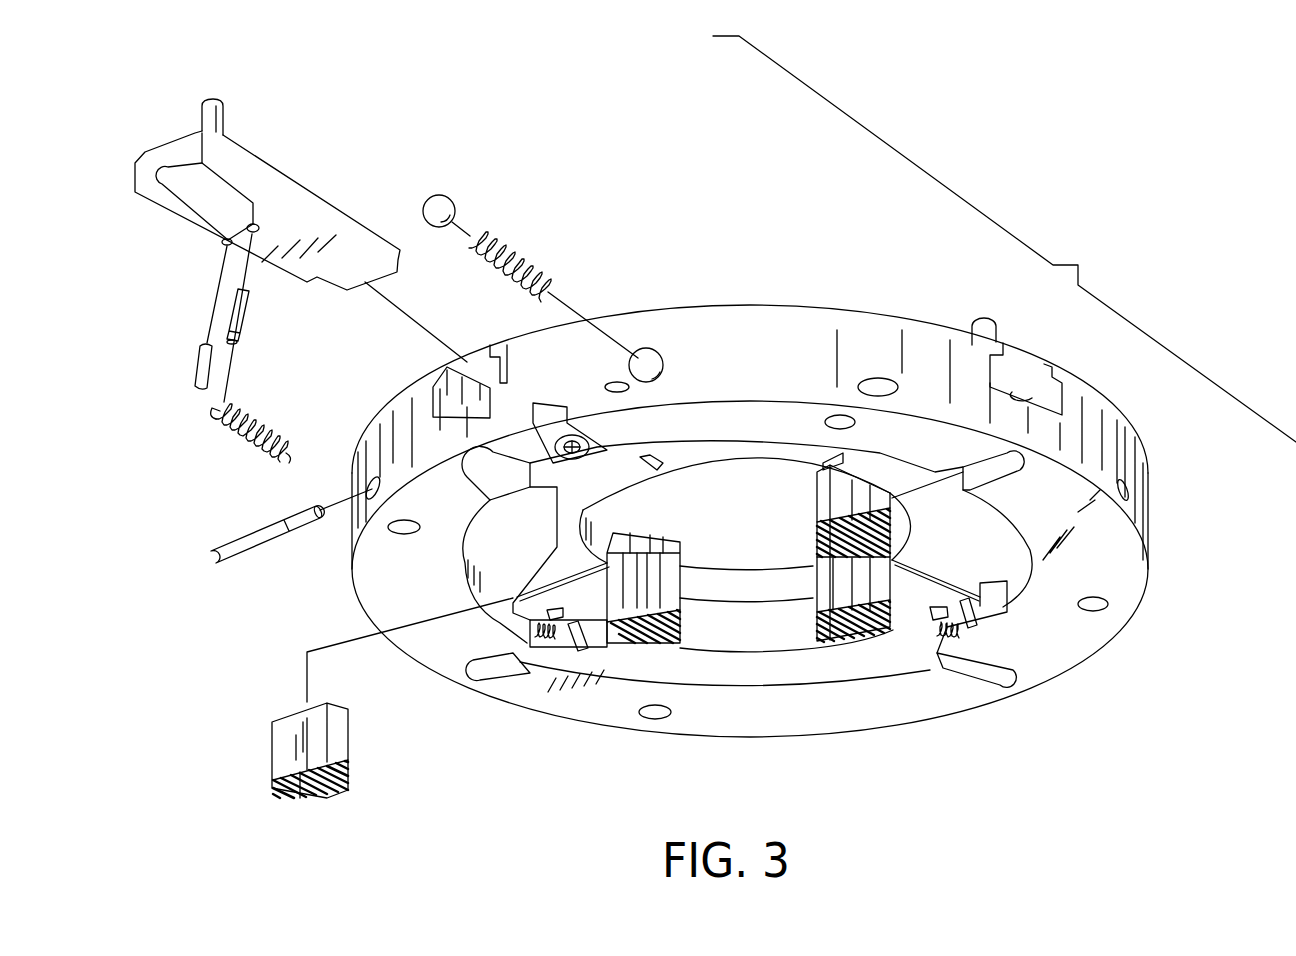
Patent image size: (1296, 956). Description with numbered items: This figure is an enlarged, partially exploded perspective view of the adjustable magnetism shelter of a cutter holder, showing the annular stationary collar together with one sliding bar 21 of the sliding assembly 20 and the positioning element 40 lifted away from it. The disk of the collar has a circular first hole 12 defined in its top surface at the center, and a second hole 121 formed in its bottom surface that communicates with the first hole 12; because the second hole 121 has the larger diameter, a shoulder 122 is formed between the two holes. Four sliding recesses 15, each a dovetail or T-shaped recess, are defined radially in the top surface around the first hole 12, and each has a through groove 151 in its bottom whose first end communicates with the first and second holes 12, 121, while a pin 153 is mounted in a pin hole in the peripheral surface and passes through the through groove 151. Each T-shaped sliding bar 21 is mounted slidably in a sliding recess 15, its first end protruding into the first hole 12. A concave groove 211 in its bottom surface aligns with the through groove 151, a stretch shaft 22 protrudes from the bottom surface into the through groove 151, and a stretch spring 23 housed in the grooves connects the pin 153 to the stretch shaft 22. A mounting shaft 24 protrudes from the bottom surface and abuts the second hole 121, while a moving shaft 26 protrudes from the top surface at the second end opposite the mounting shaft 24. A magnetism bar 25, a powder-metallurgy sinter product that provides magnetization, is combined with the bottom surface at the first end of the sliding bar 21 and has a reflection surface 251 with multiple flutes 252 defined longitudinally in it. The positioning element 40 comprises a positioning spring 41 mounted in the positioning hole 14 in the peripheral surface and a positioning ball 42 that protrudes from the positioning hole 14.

The first hole 12 is at (693, 463).
The positioning hole 14 is at (645, 362).
The sliding recess 15 is at (435, 398).
The sliding assembly 20 is at (556, 271).
The sliding bar 21 is at (327, 207).
The stretch shaft 22 is at (244, 304).
The stretch spring 23 is at (260, 423).
The mounting shaft 24 is at (200, 360).
The magnetism bar 25 is at (347, 722).
The moving shaft 26 is at (222, 122).
The positioning element 40 is at (543, 258).
The positioning spring 41 is at (515, 242).
The positioning ball 42 is at (446, 207).
The second hole 121 is at (858, 668).
The shoulder 122 is at (718, 637).
The through groove 151 is at (503, 465).
The pin 153 is at (240, 548).
The concave groove 211 is at (176, 190).
The reflection surface 251 is at (272, 800).
The flute 252 is at (303, 793).